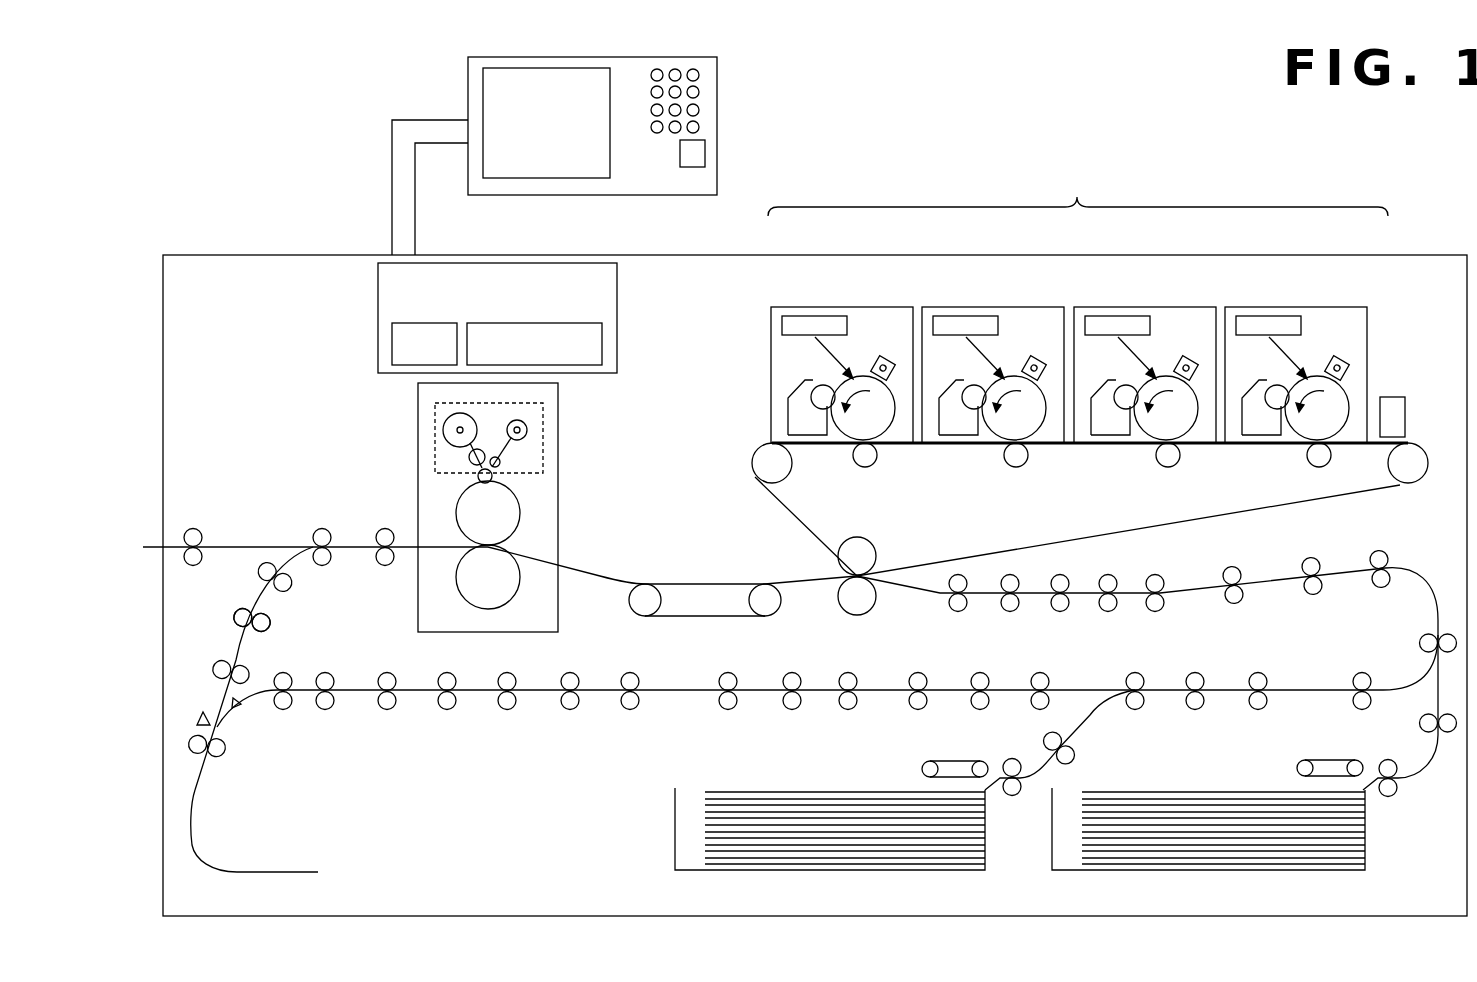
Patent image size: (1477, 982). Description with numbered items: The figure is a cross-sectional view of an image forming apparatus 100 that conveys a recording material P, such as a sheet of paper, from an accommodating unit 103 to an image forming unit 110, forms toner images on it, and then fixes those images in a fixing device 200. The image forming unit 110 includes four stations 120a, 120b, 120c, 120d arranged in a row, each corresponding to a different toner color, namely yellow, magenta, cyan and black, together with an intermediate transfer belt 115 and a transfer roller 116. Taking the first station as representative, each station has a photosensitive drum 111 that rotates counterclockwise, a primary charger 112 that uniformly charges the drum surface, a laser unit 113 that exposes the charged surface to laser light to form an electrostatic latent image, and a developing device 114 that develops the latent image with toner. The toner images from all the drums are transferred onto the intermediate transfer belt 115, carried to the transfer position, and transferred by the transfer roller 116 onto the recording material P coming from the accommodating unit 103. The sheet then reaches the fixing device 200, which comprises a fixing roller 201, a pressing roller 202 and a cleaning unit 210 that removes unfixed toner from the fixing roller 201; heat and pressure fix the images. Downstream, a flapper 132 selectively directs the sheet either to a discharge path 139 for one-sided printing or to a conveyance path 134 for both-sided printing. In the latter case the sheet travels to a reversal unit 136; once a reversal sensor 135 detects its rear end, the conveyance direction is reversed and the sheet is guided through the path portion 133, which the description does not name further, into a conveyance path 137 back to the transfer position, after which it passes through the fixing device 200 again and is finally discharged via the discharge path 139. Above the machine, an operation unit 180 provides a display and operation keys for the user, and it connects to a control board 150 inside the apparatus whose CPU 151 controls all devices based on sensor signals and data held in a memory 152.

The image forming apparatus 100 is at (1441, 255).
The operation unit 180 is at (717, 95).
The control board 150 is at (577, 263).
The CPU 151 is at (392, 345).
The memory 152 is at (602, 345).
The fixing device 200 is at (418, 413).
The cleaning unit 210 is at (545, 432).
The fixing roller 201 is at (458, 505).
The pressing roller 202 is at (490, 609).
The discharge path 139 is at (220, 545).
The flapper 132 is at (285, 540).
The conveyance path 134 is at (238, 646).
The reversal sensor 135 is at (197, 718).
The conveyance path 133 is at (233, 704).
The reversal unit 136 is at (191, 800).
The conveyance path 137 is at (420, 695).
The accommodating unit 103 is at (1298, 868).
The recording material P is at (1213, 790).
The intermediate transfer belt 115 is at (992, 554).
The transfer roller 116 is at (876, 609).
The image forming unit 110 is at (1046, 322).
The station 120a is at (831, 347).
The station 120b is at (994, 307).
The station 120c is at (1145, 307).
The station 120d is at (1298, 307).
The photosensitive drum 111 is at (878, 430).
The primary charger 112 is at (885, 357).
The laser unit 113 is at (782, 323).
The developing device 114 is at (788, 412).